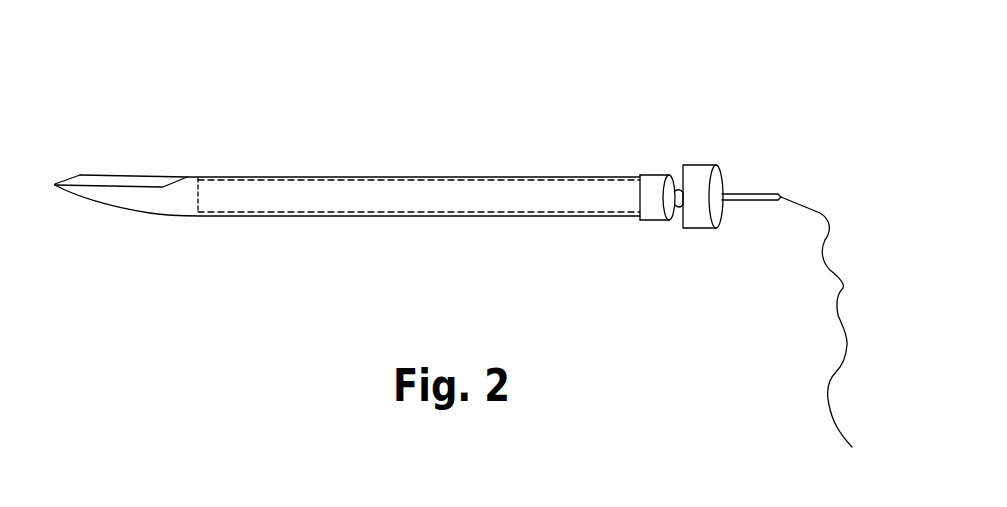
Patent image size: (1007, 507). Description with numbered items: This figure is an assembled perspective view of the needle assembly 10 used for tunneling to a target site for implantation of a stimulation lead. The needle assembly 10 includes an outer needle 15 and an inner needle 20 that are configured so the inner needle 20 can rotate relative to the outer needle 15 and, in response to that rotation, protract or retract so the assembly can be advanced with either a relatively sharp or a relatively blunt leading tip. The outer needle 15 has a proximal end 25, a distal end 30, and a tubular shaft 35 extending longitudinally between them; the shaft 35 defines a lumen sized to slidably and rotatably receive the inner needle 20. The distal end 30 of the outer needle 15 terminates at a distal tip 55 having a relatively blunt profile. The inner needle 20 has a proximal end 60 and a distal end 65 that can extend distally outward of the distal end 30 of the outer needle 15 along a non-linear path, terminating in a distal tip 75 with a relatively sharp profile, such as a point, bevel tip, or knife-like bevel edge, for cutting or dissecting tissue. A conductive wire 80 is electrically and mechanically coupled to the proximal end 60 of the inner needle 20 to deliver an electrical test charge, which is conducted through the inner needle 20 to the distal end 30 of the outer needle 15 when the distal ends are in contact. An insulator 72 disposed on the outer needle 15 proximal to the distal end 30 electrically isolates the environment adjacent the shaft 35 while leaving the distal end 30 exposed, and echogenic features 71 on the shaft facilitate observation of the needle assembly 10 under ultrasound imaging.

The needle assembly 10 is at (415, 60).
The outer needle 15 is at (253, 171).
The inner needle 20 is at (717, 133).
The proximal end 25 is at (653, 221).
The distal end 30 is at (138, 212).
The shaft 35 is at (428, 217).
The distal tip 55 is at (87, 198).
The proximal end 60 is at (717, 167).
The distal end 65 is at (118, 176).
The echogenic features 71 is at (323, 177).
The insulator 72 is at (335, 223).
The distal tip 75 is at (65, 172).
The conductive wire 80 is at (833, 313).